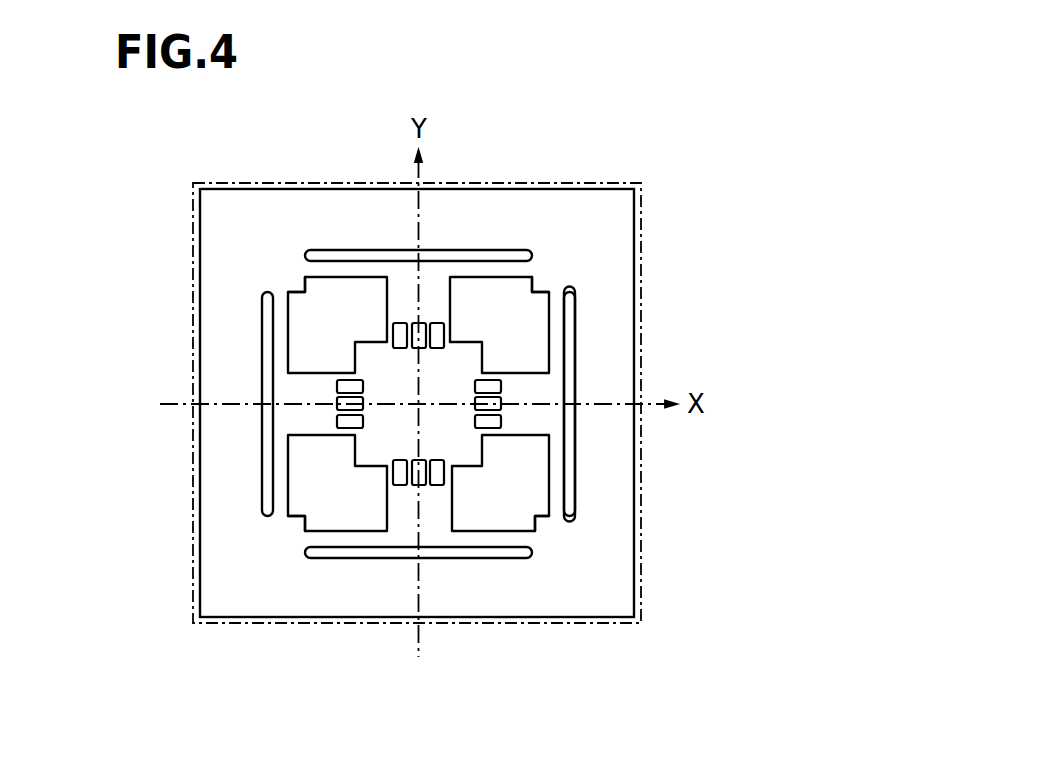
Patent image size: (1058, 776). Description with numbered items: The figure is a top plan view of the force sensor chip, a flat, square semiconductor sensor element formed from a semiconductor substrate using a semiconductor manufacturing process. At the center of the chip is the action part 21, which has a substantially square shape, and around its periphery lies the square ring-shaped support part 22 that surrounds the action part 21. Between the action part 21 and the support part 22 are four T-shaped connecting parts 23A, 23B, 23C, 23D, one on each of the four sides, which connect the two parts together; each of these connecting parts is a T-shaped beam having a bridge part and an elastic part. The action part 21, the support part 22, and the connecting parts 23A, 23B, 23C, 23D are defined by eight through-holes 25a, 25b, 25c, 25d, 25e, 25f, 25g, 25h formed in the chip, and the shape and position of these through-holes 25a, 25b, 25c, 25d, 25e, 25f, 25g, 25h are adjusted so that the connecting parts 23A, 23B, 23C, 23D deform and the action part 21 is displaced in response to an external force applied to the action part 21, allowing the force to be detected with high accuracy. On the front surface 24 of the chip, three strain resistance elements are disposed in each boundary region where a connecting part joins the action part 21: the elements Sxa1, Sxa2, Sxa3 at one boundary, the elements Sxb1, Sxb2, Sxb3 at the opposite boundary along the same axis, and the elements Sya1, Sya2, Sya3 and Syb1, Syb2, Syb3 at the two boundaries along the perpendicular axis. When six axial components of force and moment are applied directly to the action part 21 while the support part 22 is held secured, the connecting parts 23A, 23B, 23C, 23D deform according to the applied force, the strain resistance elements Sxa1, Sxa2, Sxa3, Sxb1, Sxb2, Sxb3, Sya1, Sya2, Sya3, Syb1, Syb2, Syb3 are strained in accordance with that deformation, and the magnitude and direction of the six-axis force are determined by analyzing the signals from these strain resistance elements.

The action part 21 is at (453, 442).
The support part 22 is at (643, 242).
The connecting part 23A is at (447, 312).
The connecting part 23B is at (512, 378).
The connecting part 23C is at (447, 500).
The connecting part 23D is at (310, 430).
The front surface 24 is at (198, 237).
The through-hole 25a is at (520, 250).
The through-hole 25b is at (570, 332).
The through-hole 25c is at (522, 502).
The through-hole 25d is at (263, 472).
The through-hole 25e is at (520, 297).
The through-hole 25f is at (522, 558).
The through-hole 25g is at (313, 507).
The through-hole 25h is at (297, 296).
The strain resistance element Sxa1 is at (502, 422).
The strain resistance element Sxa2 is at (502, 400).
The strain resistance element Sxa3 is at (502, 388).
The strain resistance element Sxb1 is at (337, 382).
The strain resistance element Sxb2 is at (337, 402).
The strain resistance element Sxb3 is at (337, 417).
The strain resistance element Sya1 is at (437, 323).
The strain resistance element Sya2 is at (417, 323).
The strain resistance element Sya3 is at (393, 330).
The strain resistance element Syb1 is at (400, 488).
The strain resistance element Syb2 is at (413, 488).
The strain resistance element Syb3 is at (440, 488).